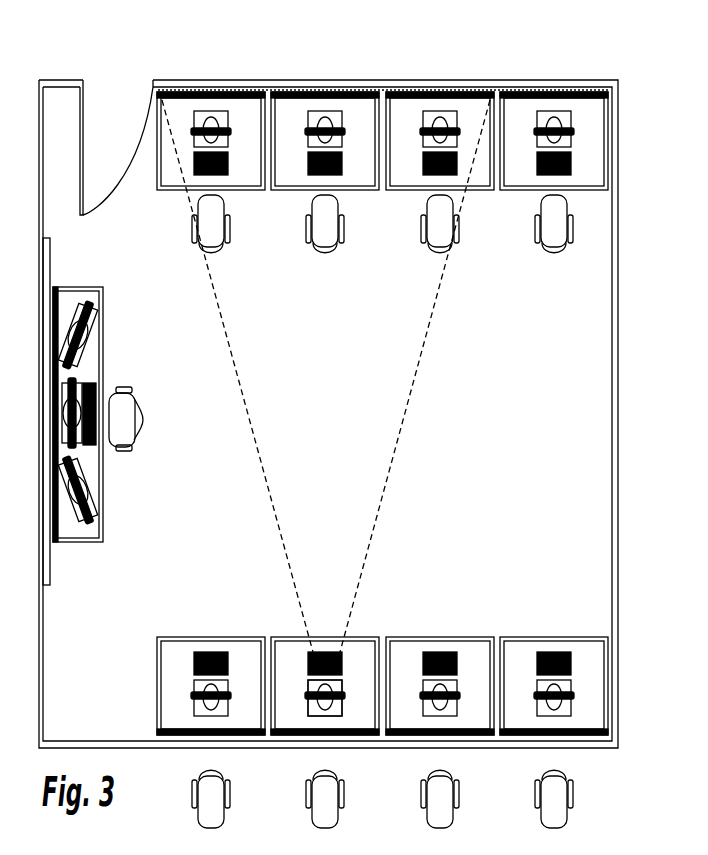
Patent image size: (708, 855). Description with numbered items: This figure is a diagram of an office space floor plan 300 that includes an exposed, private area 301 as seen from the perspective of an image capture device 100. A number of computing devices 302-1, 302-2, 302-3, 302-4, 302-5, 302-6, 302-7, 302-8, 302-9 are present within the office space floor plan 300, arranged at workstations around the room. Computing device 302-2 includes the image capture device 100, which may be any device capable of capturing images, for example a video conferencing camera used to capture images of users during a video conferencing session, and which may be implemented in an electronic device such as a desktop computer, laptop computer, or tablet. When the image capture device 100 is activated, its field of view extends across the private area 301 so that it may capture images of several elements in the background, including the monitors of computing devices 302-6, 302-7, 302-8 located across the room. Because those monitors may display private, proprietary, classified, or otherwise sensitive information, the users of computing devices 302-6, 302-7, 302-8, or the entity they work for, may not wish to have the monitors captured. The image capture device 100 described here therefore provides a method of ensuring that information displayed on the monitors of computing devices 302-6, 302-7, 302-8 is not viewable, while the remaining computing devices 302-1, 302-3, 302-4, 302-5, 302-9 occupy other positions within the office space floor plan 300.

The office space floor plan 300 is at (102, 85).
The exposed, private area 301 is at (290, 362).
The computing device 302-1 is at (196, 680).
The computing device 302-2 is at (310, 680).
The computing device 302-3 is at (424, 680).
The computing device 302-4 is at (538, 680).
The computing device 302-5 is at (538, 153).
The computing device 302-6 is at (424, 153).
The computing device 302-7 is at (309, 153).
The computing device 302-8 is at (195, 153).
The computing device 302-9 is at (83, 380).
The image capture device 100 is at (325, 688).